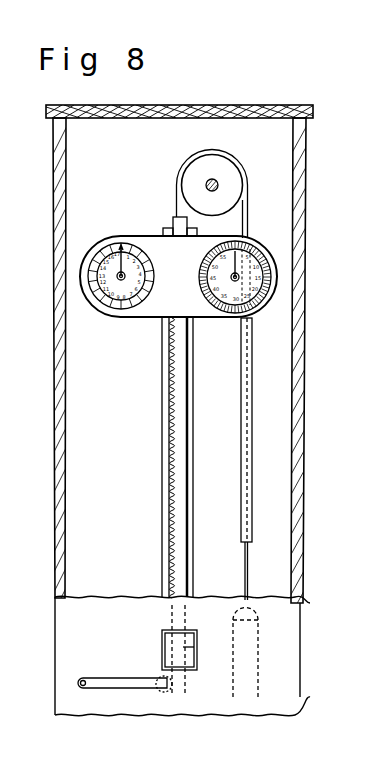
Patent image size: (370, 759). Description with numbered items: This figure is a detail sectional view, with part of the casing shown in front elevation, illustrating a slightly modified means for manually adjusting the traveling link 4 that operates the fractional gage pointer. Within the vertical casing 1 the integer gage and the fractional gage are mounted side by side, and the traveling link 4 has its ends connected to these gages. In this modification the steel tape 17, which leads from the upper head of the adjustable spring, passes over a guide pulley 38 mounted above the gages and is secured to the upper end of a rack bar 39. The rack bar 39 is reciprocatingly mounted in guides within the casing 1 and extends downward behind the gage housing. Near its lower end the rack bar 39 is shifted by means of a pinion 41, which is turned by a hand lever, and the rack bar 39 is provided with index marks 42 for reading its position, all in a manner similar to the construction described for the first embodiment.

The casing 1 is at (53, 331).
The guide pulley 38 is at (227, 172).
The steel tape 17 is at (249, 224).
The rack bar 39 is at (172, 380).
The traveling link 4 is at (162, 418).
The index marks 42 is at (176, 645).
The pinion 41 is at (163, 692).